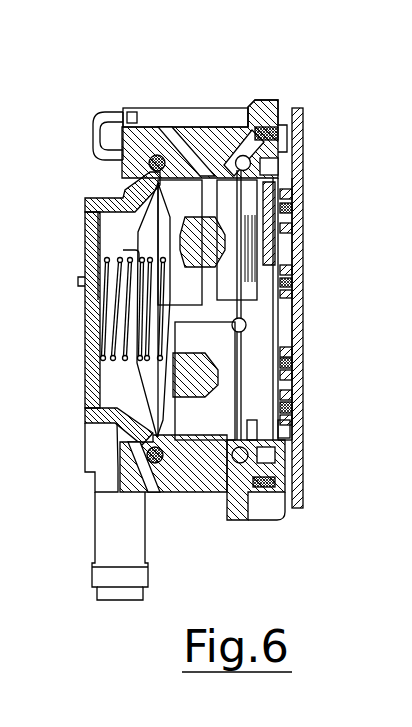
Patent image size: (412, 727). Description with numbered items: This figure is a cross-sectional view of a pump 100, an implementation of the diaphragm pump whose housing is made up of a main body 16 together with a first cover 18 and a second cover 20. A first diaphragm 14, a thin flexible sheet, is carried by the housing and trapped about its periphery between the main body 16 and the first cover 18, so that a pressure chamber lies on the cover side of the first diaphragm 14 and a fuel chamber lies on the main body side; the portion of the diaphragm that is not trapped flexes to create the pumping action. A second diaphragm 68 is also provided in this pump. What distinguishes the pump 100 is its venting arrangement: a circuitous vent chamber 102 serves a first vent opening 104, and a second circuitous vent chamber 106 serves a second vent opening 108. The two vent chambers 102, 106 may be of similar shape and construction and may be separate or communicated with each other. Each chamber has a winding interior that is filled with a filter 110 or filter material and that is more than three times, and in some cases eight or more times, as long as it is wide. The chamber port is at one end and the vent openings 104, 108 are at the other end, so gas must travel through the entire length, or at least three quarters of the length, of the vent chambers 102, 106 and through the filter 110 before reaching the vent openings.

The pump 100 is at (318, 84).
The first diaphragm 14 is at (137, 232).
The main body 16 is at (193, 137).
The first cover 18 is at (138, 127).
The second cover 20 is at (265, 108).
The second diaphragm 68 is at (242, 418).
The circuitous vent chamber 102 is at (282, 408).
The first vent opening 104 is at (267, 407).
The second circuitous vent chamber 106 is at (278, 196).
The second vent opening 108 is at (265, 213).
The filter 110 is at (282, 360).